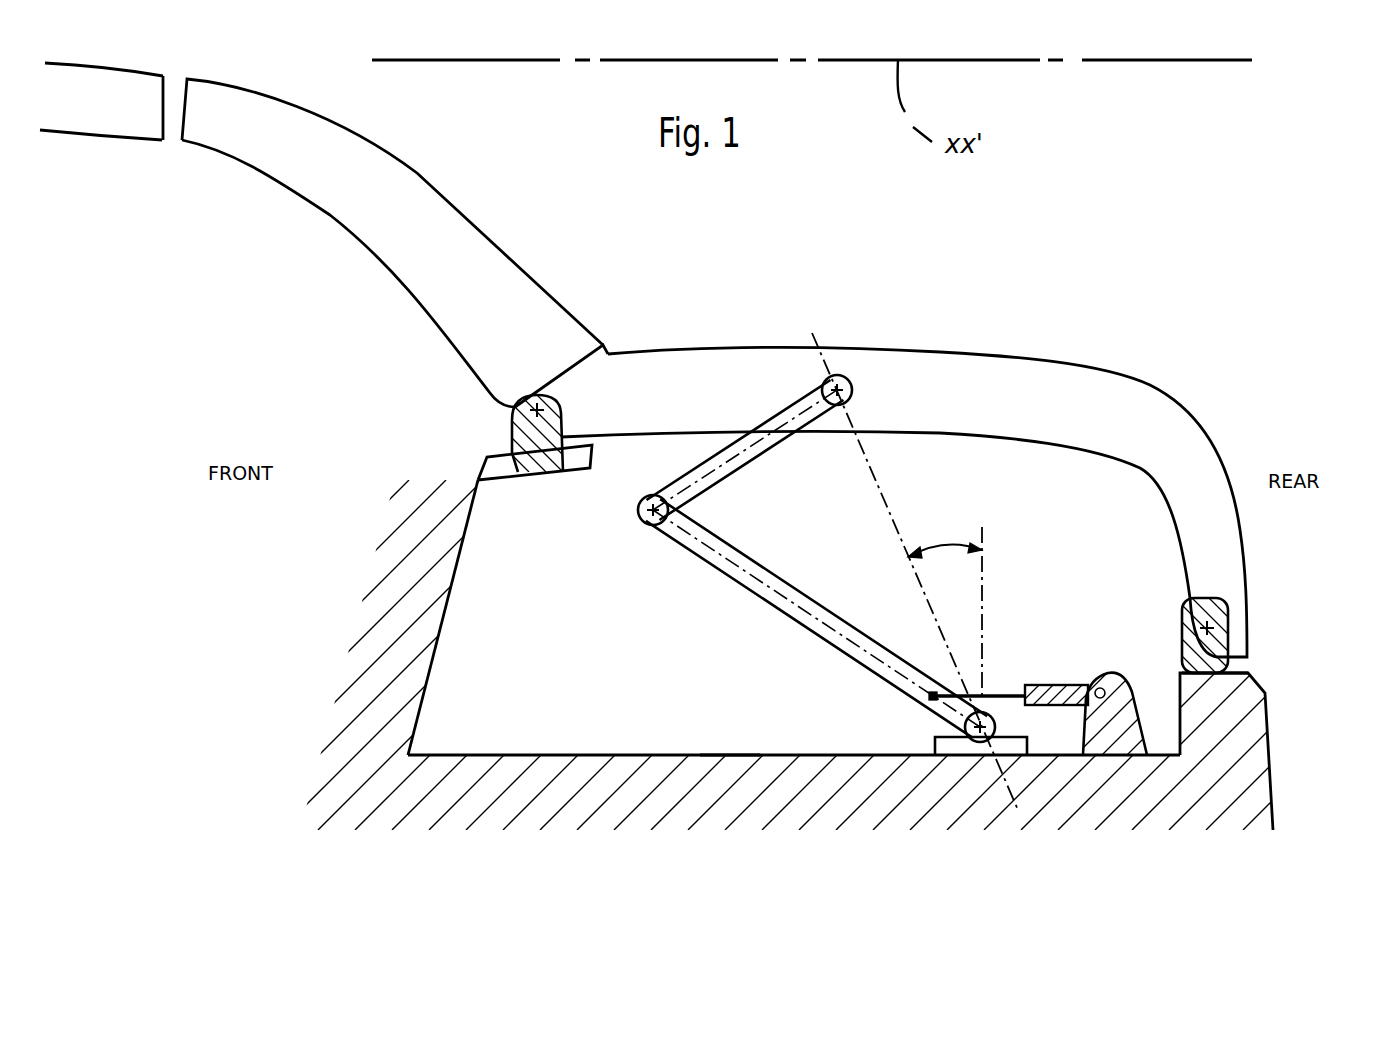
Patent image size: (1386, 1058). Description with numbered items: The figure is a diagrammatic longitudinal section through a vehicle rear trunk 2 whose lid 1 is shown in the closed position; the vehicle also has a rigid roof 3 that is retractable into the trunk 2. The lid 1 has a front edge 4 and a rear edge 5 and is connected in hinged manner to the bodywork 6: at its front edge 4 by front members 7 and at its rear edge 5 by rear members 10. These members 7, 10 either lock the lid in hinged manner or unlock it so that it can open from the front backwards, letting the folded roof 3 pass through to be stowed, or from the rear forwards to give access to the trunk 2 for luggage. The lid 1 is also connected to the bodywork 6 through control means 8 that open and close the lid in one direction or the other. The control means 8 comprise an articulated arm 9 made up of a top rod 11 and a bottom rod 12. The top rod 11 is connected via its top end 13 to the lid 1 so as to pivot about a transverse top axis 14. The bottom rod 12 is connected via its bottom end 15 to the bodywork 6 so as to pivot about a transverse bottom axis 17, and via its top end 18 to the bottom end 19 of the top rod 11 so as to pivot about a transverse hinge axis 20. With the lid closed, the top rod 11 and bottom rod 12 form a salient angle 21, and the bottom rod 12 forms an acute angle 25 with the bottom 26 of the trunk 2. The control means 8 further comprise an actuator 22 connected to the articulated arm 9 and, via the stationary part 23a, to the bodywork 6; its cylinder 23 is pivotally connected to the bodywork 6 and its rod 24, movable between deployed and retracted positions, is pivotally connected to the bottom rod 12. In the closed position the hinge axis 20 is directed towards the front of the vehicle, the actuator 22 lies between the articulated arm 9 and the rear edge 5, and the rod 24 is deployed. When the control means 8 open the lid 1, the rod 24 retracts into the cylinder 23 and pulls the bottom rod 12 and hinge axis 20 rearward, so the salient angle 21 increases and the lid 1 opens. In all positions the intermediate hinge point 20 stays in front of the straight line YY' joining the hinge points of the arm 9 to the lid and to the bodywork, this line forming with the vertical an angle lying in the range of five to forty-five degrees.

The lid 1 is at (773, 370).
The rear trunk 2 is at (537, 673).
The rigid roof 3 is at (420, 173).
The front edge 4 is at (578, 405).
The rear edge 5 is at (1237, 613).
The bodywork 6 is at (542, 790).
The front members 7 is at (515, 430).
The control means 8 is at (1007, 580).
The articulated arm 9 is at (907, 560).
The rear members 10 is at (1230, 667).
The top rod 11 is at (710, 550).
The bottom rod 12 is at (795, 625).
The top end 13 is at (787, 577).
The top axis 14 is at (850, 400).
The bottom end 15 is at (940, 712).
The bottom axis 17 is at (988, 742).
The top end 18 is at (690, 548).
The bottom end 19 is at (677, 477).
The hinge axis 20 is at (643, 523).
The salient angle 21 is at (730, 510).
The actuator 22 is at (1062, 710).
The cylinder 23 is at (1058, 683).
The stationary part 23a is at (1103, 678).
The rod 24 is at (933, 694).
The acute angle 25 is at (855, 755).
The bottom 26 is at (725, 755).